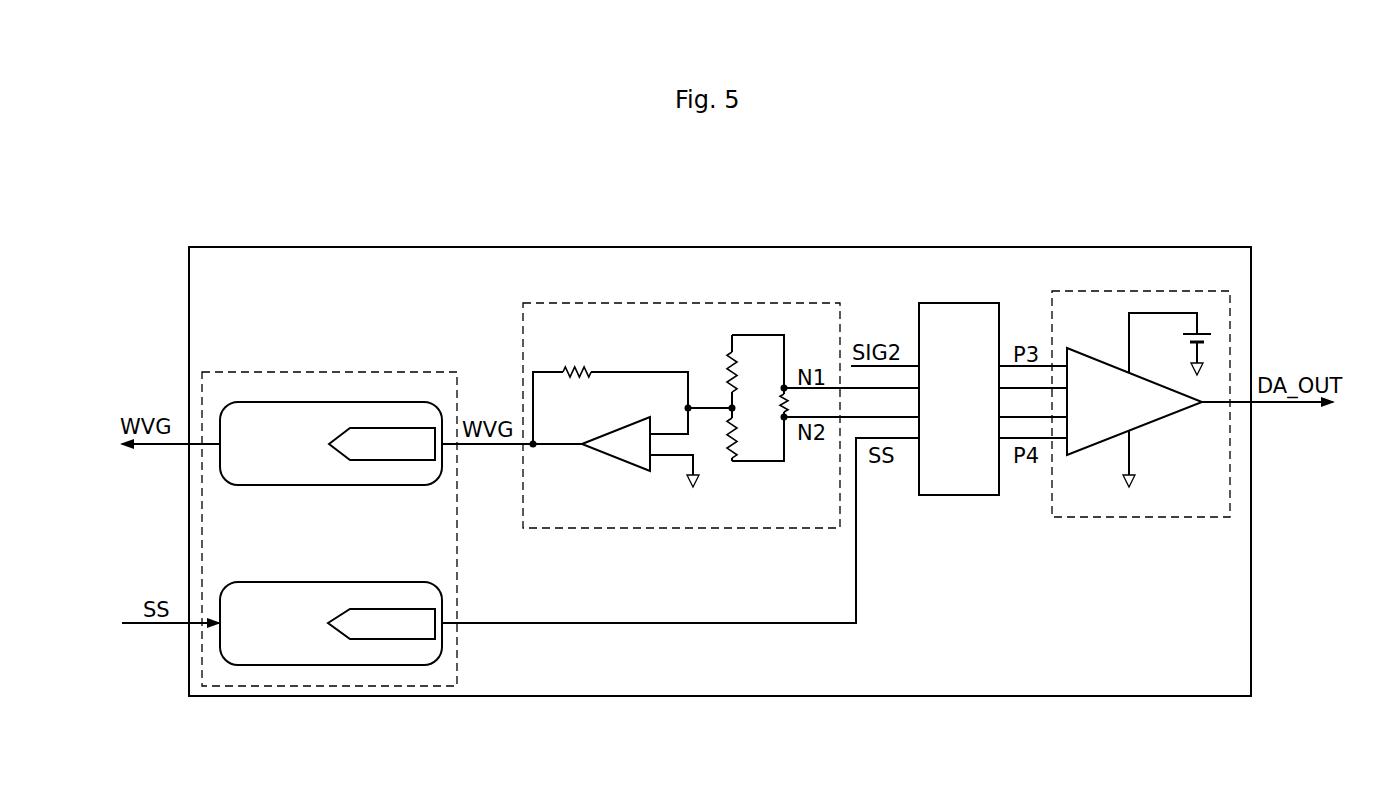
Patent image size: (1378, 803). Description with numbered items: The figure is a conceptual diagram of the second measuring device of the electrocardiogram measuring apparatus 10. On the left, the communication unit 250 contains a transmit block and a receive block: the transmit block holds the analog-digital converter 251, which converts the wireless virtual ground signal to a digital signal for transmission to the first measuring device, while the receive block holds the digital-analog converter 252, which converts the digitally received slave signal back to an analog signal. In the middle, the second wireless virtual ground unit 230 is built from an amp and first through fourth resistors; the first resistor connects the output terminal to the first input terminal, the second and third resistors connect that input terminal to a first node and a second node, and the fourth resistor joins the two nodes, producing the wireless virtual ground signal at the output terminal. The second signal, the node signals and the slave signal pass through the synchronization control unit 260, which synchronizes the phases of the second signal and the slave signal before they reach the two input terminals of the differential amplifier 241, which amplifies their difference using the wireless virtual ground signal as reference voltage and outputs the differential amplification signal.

The electrocardiogram (ECG) measuring apparatus 10 is at (1246, 210).
The second wireless virtual ground unit 230 is at (619, 303).
The differential amplifier 241 is at (1123, 291).
The communication unit 250 is at (238, 686).
The analog-digital converter 251 is at (392, 428).
The digital-analog converter 252 is at (392, 639).
The synchronization control unit 260 is at (958, 303).